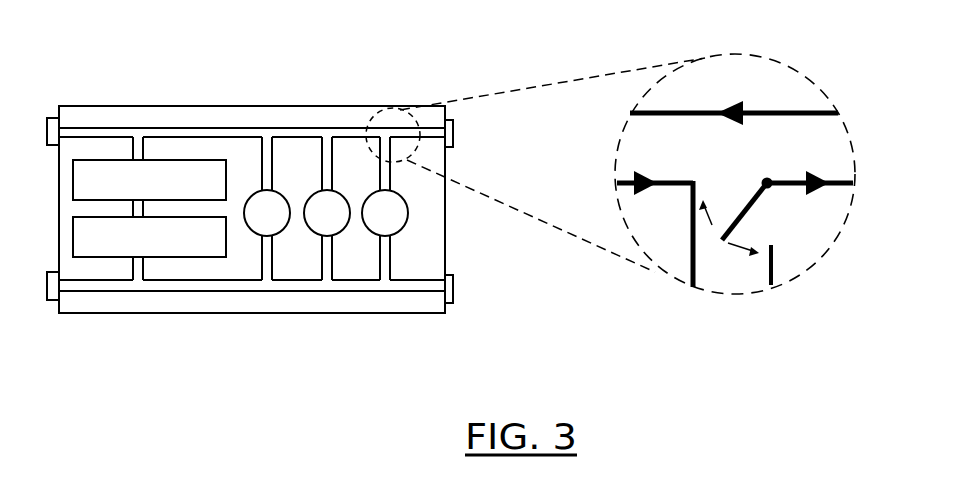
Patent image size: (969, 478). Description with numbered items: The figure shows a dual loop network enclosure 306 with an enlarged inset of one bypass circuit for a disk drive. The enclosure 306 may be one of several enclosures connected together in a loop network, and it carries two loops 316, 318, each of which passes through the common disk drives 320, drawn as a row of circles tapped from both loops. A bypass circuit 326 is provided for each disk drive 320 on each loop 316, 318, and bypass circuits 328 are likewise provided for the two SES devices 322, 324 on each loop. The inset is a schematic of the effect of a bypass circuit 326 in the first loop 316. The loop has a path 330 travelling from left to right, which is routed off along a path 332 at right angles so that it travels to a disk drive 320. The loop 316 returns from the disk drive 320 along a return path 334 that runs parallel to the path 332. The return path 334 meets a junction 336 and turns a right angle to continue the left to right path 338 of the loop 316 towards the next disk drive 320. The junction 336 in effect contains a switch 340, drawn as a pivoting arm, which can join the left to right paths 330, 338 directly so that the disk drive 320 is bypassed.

The enclosure 306 is at (101, 106).
The first loop 316 is at (250, 128).
The second loop 318 is at (153, 291).
The disk drive 320 is at (278, 237).
The SES device 322 is at (73, 183).
The SES device 324 is at (73, 240).
The bypass circuit 326 is at (330, 140).
The bypass circuit 328 is at (138, 136).
The path 330 is at (620, 182).
The path 332 is at (690, 253).
The return path 334 is at (772, 268).
The junction 336 is at (775, 180).
The left to right path 338 is at (840, 190).
The switch 340 is at (760, 212).